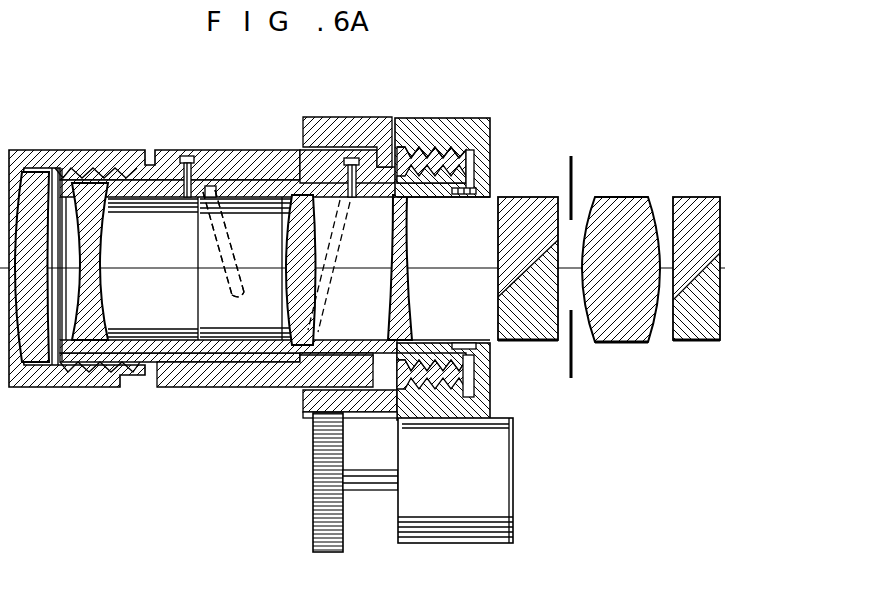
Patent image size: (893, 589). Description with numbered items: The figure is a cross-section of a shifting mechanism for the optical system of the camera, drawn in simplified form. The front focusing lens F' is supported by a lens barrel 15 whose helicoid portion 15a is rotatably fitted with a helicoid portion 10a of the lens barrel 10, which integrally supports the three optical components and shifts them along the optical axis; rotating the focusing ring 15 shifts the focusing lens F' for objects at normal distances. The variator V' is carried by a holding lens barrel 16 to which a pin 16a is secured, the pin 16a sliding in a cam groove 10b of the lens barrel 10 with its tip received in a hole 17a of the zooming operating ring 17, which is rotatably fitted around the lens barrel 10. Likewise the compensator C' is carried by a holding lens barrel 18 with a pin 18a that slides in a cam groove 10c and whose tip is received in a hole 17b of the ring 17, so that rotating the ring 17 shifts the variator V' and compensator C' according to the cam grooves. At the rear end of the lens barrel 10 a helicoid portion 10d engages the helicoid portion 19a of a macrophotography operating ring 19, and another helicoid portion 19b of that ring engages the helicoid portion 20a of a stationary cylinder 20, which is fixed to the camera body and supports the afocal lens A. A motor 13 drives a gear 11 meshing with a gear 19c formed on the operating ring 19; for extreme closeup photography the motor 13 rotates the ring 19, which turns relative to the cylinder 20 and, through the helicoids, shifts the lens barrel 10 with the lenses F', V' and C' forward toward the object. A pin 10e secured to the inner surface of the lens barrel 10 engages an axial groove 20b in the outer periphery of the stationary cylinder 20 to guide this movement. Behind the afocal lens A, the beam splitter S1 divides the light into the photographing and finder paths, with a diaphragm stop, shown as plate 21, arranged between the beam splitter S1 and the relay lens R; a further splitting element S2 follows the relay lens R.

The lens barrel 10 is at (150, 165).
The helicoid portion 10a is at (116, 178).
The cam groove 10b is at (216, 178).
The cam groove 10c is at (300, 152).
The helicoid portion 10d is at (477, 362).
The pin 10e is at (476, 185).
The gear 11 is at (322, 512).
The motor 13 is at (510, 522).
The lens barrel 15 is at (88, 168).
The helicoid portion 15a is at (70, 166).
The holding lens barrel 16 is at (136, 350).
The pin 16a is at (218, 186).
The zooming operating ring 17 is at (183, 372).
The hole 17a is at (186, 156).
The hole 17b is at (332, 138).
The holding lens barrel 18 is at (300, 388).
The pin 18a is at (348, 160).
The macrophotography operating ring 19 is at (490, 398).
The helicoid portion 19a is at (478, 385).
The helicoid portion 19b is at (408, 145).
The gear 19c is at (306, 414).
The stationary cylinder 20 is at (484, 138).
The helicoid portion 20a is at (445, 140).
The groove 20b is at (445, 160).
The stop plate 21 is at (573, 162).
The afocal lens A is at (487, 197).
The beam splitter S1 is at (528, 203).
The second prism S2 is at (686, 203).
The relay lens R is at (613, 203).
The front focusing lens F' is at (30, 298).
The variator V' is at (89, 306).
The compensator C' is at (250, 253).